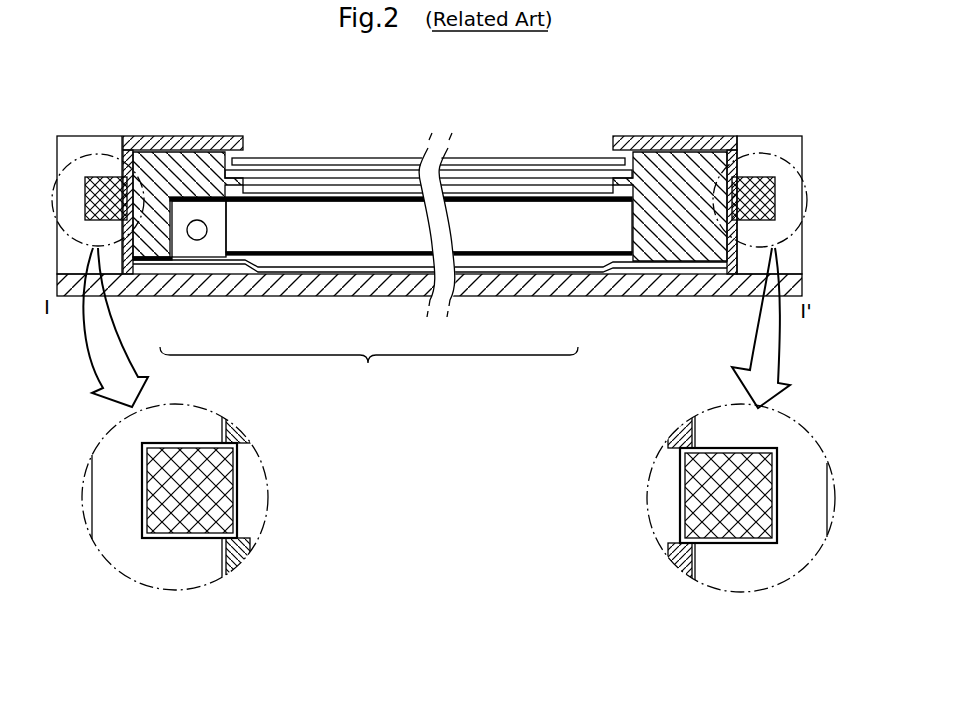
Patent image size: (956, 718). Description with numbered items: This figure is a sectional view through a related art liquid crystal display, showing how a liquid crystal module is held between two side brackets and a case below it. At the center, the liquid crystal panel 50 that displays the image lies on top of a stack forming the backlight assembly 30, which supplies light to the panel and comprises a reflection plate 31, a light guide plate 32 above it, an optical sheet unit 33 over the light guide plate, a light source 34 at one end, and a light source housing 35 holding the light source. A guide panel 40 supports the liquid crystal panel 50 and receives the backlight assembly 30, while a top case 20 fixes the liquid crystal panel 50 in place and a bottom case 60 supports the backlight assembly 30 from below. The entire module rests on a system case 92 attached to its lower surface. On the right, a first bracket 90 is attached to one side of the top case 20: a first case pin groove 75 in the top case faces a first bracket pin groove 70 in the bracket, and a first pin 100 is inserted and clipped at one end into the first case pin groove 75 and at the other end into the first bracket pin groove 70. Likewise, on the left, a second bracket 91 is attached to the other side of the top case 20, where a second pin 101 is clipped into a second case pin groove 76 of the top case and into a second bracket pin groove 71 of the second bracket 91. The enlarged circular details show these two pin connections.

The top case 20 is at (680, 136).
The backlight assembly 30 is at (369, 369).
The reflection plate 31 is at (573, 256).
The light guide plate 32 is at (530, 240).
The optical sheet unit 33 is at (483, 201).
The light source 34 is at (197, 230).
The light source housing 35 is at (168, 260).
The guide panel 40 is at (688, 262).
The liquid crystal panel 50 is at (535, 144).
The bottom case 60 is at (648, 272).
The first bracket pin groove 70 is at (770, 448).
The second bracket pin groove 71 is at (155, 443).
The first case pin groove 75 is at (670, 457).
The second case pin groove 76 is at (233, 433).
The first bracket 90 is at (770, 136).
The second bracket 91 is at (83, 135).
The system case 92 is at (802, 284).
The first pin 100 is at (683, 497).
The second pin 101 is at (230, 485).